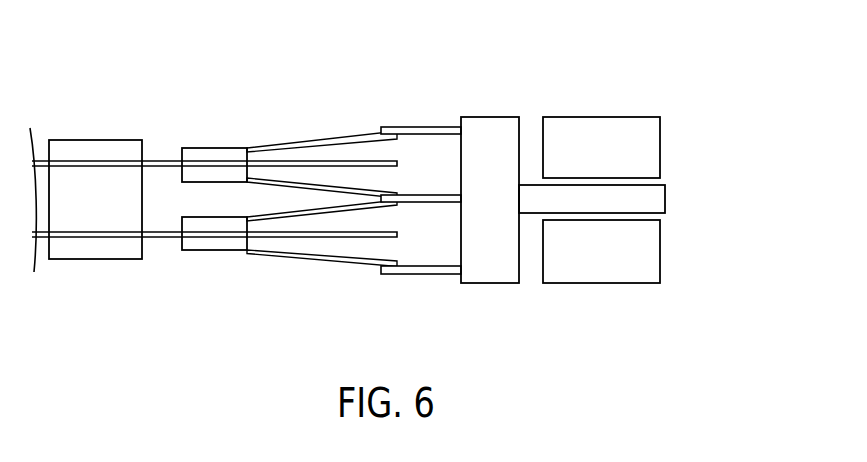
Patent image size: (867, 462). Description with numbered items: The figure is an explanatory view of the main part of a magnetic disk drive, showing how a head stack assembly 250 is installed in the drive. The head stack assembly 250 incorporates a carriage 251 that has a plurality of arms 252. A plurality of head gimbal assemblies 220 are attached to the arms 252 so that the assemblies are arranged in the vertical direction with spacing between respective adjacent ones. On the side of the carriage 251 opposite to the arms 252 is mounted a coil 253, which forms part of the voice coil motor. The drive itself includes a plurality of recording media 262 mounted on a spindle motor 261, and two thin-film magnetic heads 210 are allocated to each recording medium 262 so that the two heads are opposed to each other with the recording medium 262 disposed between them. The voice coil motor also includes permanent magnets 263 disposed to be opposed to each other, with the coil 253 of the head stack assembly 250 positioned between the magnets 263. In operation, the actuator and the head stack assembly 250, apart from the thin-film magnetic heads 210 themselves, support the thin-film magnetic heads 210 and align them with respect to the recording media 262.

The thin-film magnetic head 210 is at (181, 158).
The head gimbal assembly 220 is at (303, 140).
The head stack assembly 250 is at (586, 196).
The carriage 251 is at (475, 117).
The arm 252 is at (398, 127).
The coil 253 is at (655, 202).
The spindle motor 261 is at (73, 143).
The recording medium 262 is at (154, 160).
The permanent magnet 263 is at (595, 117).